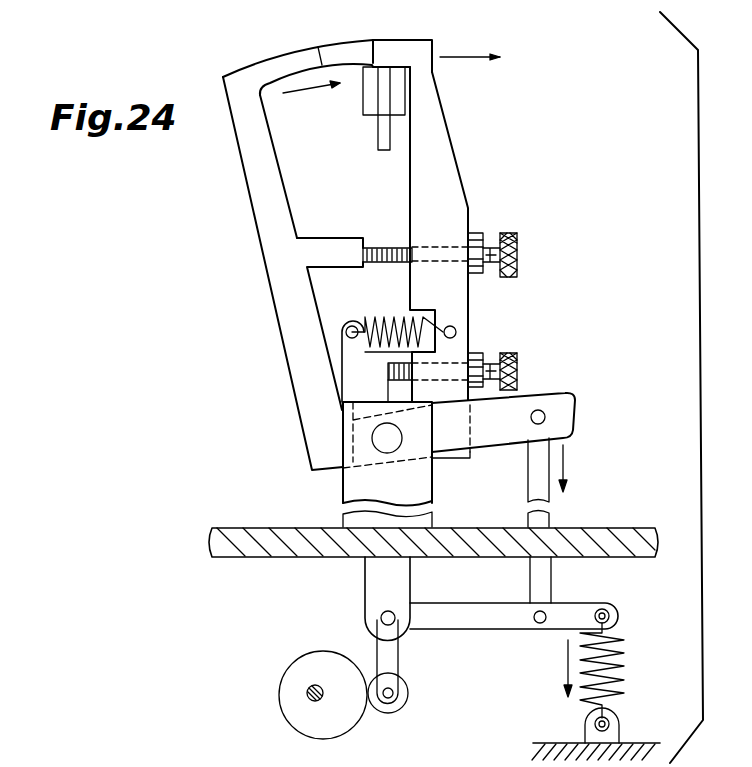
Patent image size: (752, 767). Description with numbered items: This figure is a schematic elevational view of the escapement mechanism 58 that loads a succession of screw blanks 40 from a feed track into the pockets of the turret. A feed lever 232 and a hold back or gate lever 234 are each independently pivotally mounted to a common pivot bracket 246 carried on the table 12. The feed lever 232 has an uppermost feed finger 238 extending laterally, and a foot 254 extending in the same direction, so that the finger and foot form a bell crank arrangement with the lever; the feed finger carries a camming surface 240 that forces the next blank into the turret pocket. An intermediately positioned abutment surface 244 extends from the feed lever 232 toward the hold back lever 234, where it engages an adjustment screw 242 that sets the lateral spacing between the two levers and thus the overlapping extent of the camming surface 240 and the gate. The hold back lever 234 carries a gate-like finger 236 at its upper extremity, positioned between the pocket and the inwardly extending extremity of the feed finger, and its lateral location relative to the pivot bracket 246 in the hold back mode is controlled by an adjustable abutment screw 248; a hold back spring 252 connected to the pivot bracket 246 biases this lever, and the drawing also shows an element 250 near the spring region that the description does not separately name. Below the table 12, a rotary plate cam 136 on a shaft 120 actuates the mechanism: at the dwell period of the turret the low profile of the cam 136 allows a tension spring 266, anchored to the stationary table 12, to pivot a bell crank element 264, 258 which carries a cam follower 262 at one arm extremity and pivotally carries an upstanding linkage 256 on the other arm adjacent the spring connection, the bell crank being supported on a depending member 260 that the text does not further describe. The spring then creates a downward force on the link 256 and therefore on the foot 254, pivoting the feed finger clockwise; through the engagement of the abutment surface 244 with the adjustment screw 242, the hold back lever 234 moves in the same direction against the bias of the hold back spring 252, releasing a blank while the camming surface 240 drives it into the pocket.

The table 12 is at (237, 525).
The screw blanks 40 is at (377, 52).
The escapement mechanism 58 is at (485, 183).
The cam shaft 120 is at (312, 685).
The rotary plate cam 136 is at (280, 703).
The feed lever 232 is at (258, 186).
The hold back lever 234 is at (433, 172).
The gate-like finger 236 is at (410, 50).
The feed finger 238 is at (282, 63).
The camming surface 240 is at (337, 53).
The adjustment screw 242 is at (383, 247).
The abutment surface 244 is at (320, 247).
The pivot bracket 246 is at (357, 483).
The adjustable abutment screw 248 is at (485, 357).
The lever plate 250 is at (387, 357).
The hold back spring 252 is at (387, 315).
The foot 254 is at (537, 392).
The linkage 256 is at (528, 517).
The bell crank arm 258 is at (515, 630).
The push rod 260 is at (377, 575).
The cam follower 262 is at (407, 691).
The bell crank arm 264 is at (400, 660).
The tension spring 266 is at (625, 672).